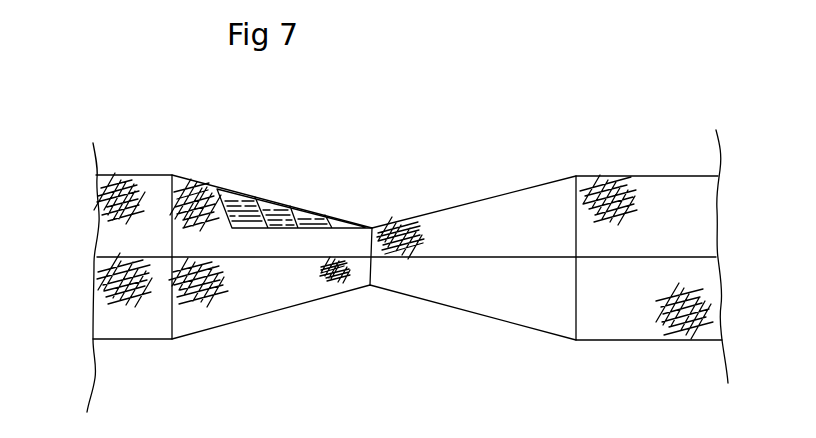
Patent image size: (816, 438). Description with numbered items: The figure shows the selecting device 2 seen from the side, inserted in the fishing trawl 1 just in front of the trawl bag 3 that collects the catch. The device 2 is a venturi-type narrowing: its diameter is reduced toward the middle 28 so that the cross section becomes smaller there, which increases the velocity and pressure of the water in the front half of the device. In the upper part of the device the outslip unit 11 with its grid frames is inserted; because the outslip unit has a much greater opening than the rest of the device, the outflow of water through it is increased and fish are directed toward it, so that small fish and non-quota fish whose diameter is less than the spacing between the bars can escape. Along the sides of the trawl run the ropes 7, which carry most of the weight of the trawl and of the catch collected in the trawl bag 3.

The fishing trawl 1 is at (119, 176).
The selecting device 2 is at (288, 125).
The trawl bag 3 is at (620, 196).
The ropes 7 is at (489, 257).
The outslip unit 11 is at (243, 197).
The narrowed middle 28 is at (373, 227).